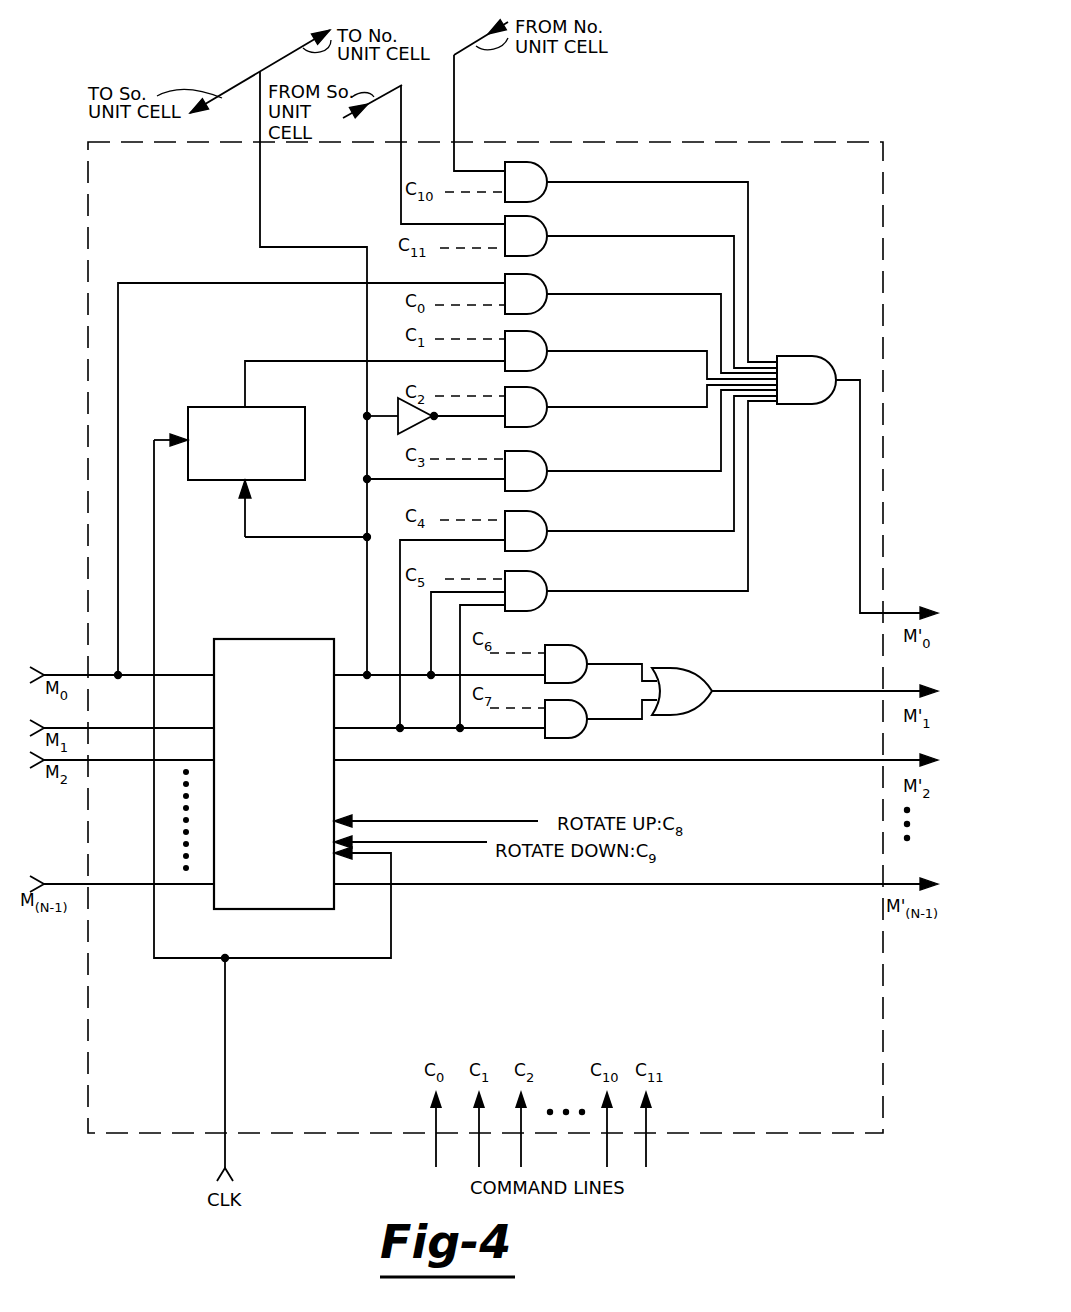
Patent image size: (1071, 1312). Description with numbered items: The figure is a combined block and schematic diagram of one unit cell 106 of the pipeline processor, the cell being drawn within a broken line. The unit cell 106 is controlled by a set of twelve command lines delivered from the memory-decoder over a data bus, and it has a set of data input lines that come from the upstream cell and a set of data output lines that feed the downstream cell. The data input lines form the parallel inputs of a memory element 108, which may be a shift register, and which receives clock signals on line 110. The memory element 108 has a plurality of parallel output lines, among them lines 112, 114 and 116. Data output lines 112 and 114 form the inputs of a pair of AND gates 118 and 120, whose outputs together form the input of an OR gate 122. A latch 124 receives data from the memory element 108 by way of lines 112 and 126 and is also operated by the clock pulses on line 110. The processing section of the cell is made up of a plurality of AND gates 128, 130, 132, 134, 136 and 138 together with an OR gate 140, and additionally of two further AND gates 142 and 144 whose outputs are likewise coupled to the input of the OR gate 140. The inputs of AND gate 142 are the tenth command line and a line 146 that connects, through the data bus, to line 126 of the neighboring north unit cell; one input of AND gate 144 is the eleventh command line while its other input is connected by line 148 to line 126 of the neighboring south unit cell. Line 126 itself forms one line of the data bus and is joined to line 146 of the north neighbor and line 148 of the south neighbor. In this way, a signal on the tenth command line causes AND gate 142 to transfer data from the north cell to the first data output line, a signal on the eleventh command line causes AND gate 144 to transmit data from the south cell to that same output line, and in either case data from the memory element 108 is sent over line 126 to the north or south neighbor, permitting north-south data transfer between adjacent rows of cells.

The unit cell 106 is at (140, 1133).
The memory element 108 is at (280, 840).
The clock line 110 is at (225, 1046).
The data output line 112 is at (384, 677).
The data output line 114 is at (373, 731).
The data output line 116 is at (447, 763).
The AND gate 118 is at (572, 646).
The AND gate 120 is at (558, 740).
The OR gate 122 is at (694, 703).
The latch 124 is at (218, 486).
The line 126 is at (260, 196).
The AND gate 128 is at (512, 604).
The AND gate 130 is at (512, 544).
The AND gate 132 is at (512, 484).
The AND gate 134 is at (512, 420).
The AND gate 136 is at (512, 364).
The AND gate 138 is at (512, 307).
The OR gate 140 is at (846, 327).
The AND gate 142 is at (512, 195).
The AND gate 144 is at (512, 249).
The line 146 is at (454, 110).
The line 148 is at (401, 171).